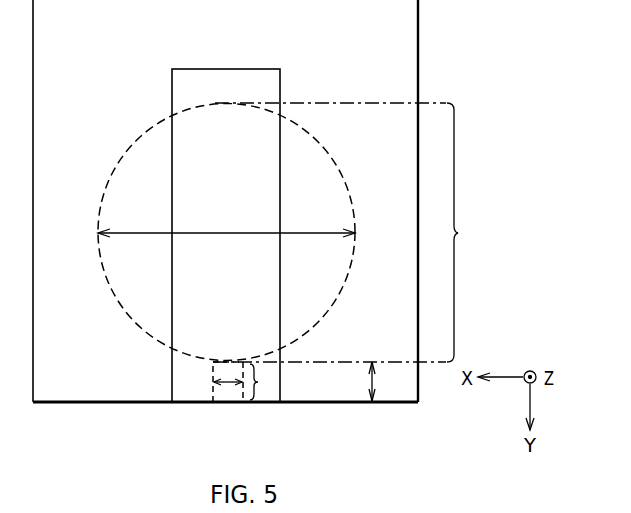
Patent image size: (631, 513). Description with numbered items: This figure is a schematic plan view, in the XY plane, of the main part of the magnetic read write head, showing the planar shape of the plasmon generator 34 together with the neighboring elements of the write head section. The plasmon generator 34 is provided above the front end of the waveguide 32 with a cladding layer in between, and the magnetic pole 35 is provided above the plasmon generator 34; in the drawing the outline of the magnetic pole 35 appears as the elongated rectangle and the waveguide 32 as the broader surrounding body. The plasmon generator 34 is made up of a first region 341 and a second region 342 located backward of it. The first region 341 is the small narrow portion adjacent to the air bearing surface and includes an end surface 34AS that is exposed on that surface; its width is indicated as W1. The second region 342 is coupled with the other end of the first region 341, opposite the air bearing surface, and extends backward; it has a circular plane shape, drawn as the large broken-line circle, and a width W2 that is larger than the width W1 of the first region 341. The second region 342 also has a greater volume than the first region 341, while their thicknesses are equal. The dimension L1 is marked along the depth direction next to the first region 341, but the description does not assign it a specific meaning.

The waveguide 32 is at (116, 398).
The plasmon generator 34 is at (98, 277).
The magnetic pole 35 is at (192, 398).
The first region 341 is at (270, 382).
The second region 342 is at (353, 232).
The end surface 34AS is at (243, 403).
The width of the first region W1 is at (230, 386).
The width of the second region W2 is at (226, 221).
The length L1 is at (385, 381).